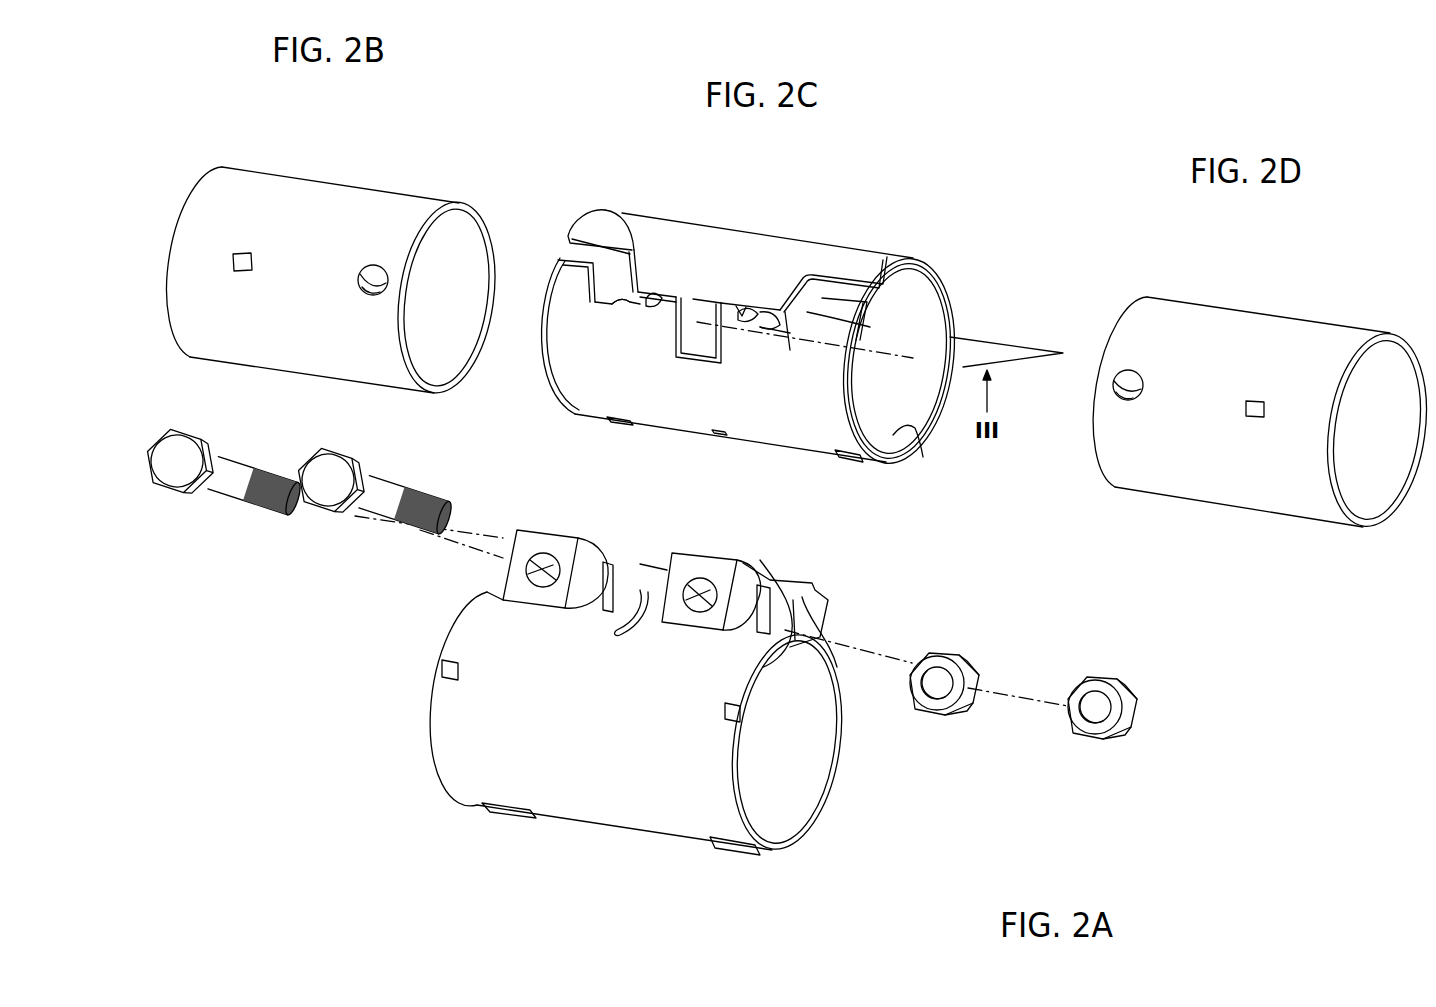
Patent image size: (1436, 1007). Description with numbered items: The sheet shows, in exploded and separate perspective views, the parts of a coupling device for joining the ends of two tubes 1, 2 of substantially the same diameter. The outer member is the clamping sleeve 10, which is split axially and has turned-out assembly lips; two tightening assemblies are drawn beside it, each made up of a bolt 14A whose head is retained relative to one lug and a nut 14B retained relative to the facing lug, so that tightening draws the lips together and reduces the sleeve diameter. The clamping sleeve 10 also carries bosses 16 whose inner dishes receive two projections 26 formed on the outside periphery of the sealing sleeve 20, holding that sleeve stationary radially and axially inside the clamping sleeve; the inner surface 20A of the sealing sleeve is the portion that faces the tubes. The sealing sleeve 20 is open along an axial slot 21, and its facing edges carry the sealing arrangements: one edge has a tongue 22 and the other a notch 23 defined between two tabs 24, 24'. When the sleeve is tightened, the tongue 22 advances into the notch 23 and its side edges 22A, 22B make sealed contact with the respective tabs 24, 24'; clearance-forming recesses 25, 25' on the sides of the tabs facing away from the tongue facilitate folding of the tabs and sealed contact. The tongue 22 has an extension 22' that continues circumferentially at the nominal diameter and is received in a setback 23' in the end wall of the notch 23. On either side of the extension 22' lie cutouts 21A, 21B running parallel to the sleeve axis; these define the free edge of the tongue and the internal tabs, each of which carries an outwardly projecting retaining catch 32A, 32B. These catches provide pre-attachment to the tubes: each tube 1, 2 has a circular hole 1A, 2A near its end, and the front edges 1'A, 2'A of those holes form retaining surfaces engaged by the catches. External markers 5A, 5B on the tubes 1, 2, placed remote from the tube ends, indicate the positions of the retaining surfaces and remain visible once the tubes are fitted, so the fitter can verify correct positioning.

In FIG. 2B, the tube 1 is at (337, 269).
In FIG. 2B, the hole 1A is at (368, 272).
In FIG. 2B, the front edge 1'A is at (357, 317).
In FIG. 2B, the marker 5A is at (242, 266).
In FIG. 2D, the tube 2 is at (1264, 400).
In FIG. 2D, the hole 2A is at (1135, 378).
In FIG. 2D, the front edge 2'A is at (1134, 418).
In FIG. 2D, the marker 5B is at (1256, 400).
In FIG. 2C, the sealing sleeve 20 is at (688, 232).
In FIG. 2C, the sleeve inner surface 20A is at (923, 448).
In FIG. 2C, the axial slot 21 is at (562, 249).
In FIG. 2C, the cutout 21A is at (626, 228).
In FIG. 2C, the cutout 21B is at (742, 305).
In FIG. 2C, the tongue 22 is at (730, 226).
In FIG. 2C, the side edge 22A is at (590, 236).
In FIG. 2C, the side edge 22B is at (818, 276).
In FIG. 2C, the extension 22' is at (723, 336).
In FIG. 2C, the notch 23 is at (657, 240).
In FIG. 2C, the setback 23' is at (698, 353).
In FIG. 2C, the tab 24 is at (607, 330).
In FIG. 2C, the tab 24' is at (779, 337).
In FIG. 2C, the clearance-forming recess 25 is at (558, 281).
In FIG. 2C, the clearance-forming recess 25' is at (847, 324).
In FIG. 2C, the projection 26 is at (615, 424).
In FIG. 2C, the retaining catch 32A is at (760, 325).
In FIG. 2C, the retaining catch 32B is at (652, 318).
In FIG. 2A, the clamping sleeve 10 is at (614, 818).
In FIG. 2A, the bolt 14A is at (180, 490).
In FIG. 2A, the nut 14B is at (950, 716).
In FIG. 2A, the boss 16 is at (500, 816).